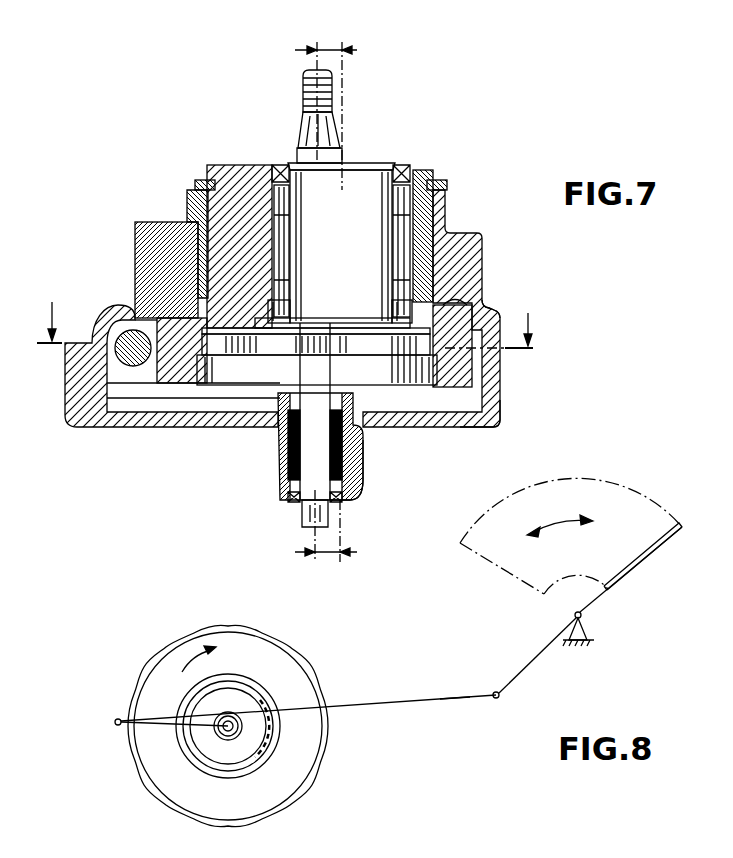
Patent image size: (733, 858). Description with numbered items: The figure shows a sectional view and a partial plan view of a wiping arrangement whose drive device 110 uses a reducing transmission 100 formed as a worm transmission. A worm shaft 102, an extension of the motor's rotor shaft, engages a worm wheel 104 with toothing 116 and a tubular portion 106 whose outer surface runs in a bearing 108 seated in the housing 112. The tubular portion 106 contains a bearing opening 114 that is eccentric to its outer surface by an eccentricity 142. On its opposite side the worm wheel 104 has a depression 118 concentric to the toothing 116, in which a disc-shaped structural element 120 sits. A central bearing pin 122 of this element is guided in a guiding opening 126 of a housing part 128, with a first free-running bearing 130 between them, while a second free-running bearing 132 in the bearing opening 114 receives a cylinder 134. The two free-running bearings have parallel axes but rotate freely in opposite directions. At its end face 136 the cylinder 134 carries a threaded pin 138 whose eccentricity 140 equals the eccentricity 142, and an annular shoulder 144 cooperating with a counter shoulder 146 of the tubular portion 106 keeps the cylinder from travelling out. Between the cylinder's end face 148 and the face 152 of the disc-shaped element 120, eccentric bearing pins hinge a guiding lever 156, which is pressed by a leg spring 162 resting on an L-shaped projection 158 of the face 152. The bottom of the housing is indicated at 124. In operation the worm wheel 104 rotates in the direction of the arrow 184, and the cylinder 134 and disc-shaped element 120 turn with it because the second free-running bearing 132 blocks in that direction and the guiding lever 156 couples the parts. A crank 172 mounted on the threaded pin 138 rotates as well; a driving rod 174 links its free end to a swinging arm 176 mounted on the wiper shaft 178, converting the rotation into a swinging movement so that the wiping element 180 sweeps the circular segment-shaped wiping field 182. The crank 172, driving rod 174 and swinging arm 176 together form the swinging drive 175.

In FIG. 7, the reducing transmission 100 is at (140, 370).
In FIG. 7, the worm shaft 102 is at (128, 330).
In FIG. 7, the worm wheel 104 is at (187, 365).
In FIG. 7, the tubular portion 106 is at (240, 180).
In FIG. 8, the tubular portion 106 is at (155, 768).
In FIG. 7, the bearing 108 is at (198, 180).
In FIG. 7, the drive device 110 is at (127, 240).
In FIG. 7, the housing 112 is at (162, 222).
In FIG. 7, the bearing opening 114 is at (286, 197).
In FIG. 8, the bearing opening 114 is at (290, 763).
In FIG. 7, the toothing 116 is at (153, 388).
In FIG. 7, the depression 118 is at (208, 342).
In FIG. 7, the disc-shaped structural element 120 is at (398, 373).
In FIG. 7, the bearing pin 122 is at (320, 430).
In FIG. 7, the housing bottom 124 is at (498, 413).
In FIG. 7, the guiding opening 126 is at (292, 467).
In FIG. 7, the housing part 128 is at (355, 492).
In FIG. 7, the first free-running bearing 130 is at (345, 472).
In FIG. 7, the second free-running bearing 132 is at (445, 224).
In FIG. 7, the cylinder 134 is at (350, 261).
In FIG. 8, the cylinder 134 is at (273, 732).
In FIG. 7, the end face 136 is at (355, 162).
In FIG. 7, the threaded pin 138 is at (303, 98).
In FIG. 8, the threaded pin 138 is at (228, 733).
In FIG. 7, the eccentricity 140 is at (343, 46).
In FIG. 7, the eccentricity 142 is at (325, 560).
In FIG. 7, the annular shoulder 144 is at (350, 325).
In FIG. 7, the counter shoulder 146 is at (278, 323).
In FIG. 7, the end face 148 is at (482, 290).
In FIG. 7, the face 152 is at (447, 352).
In FIG. 7, the guiding lever 156 is at (481, 310).
In FIG. 7, the L-shaped projection 158 is at (242, 343).
In FIG. 7, the leg spring 162 is at (302, 342).
In FIG. 8, the crank 172 is at (172, 727).
In FIG. 8, the driving rod 174 is at (388, 700).
In FIG. 8, the swinging drive 175 is at (453, 699).
In FIG. 8, the swinging arm 176 is at (532, 660).
In FIG. 8, the wiper shaft 178 is at (574, 614).
In FIG. 8, the wiping element 180 is at (632, 574).
In FIG. 8, the wiping field 182 is at (620, 495).
In FIG. 8, the arrow 184 is at (182, 672).